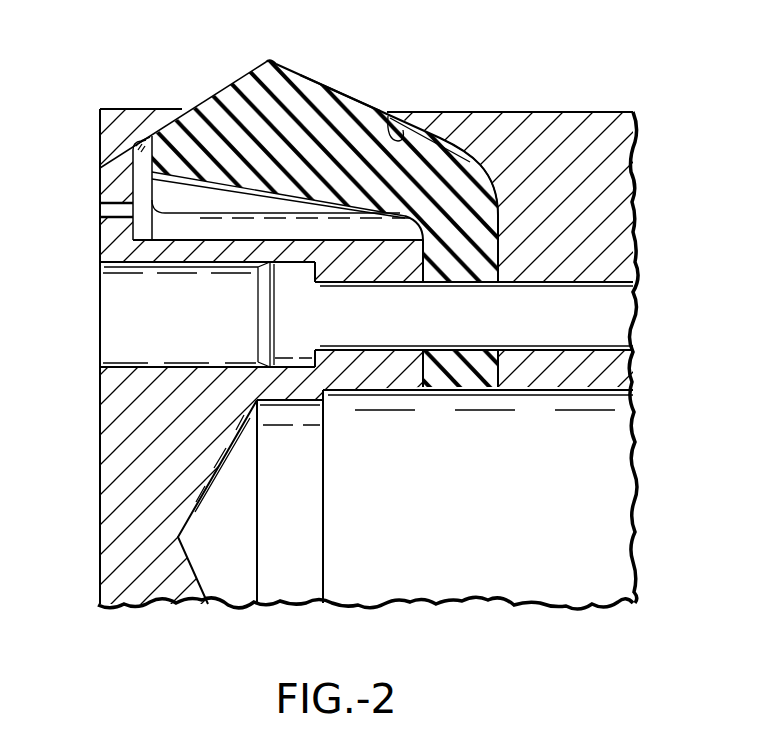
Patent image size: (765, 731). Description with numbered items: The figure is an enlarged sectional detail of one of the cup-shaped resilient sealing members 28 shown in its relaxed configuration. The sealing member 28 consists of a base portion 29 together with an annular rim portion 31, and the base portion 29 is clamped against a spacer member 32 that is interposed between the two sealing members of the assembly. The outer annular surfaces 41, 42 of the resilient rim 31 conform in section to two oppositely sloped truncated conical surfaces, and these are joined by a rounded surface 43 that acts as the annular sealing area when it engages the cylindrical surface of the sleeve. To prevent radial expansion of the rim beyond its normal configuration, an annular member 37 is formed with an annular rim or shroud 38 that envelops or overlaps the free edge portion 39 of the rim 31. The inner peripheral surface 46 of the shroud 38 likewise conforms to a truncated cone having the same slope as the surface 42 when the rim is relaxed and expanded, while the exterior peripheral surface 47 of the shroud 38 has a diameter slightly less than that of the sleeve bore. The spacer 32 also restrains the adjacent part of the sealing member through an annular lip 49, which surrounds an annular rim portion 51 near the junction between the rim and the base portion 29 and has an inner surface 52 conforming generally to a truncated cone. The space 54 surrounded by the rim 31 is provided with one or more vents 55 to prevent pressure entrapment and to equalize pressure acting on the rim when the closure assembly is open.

The sealing member 28 is at (362, 96).
The base portion 29 is at (472, 378).
The annular rim portion 31 is at (273, 173).
The spacer member 32 is at (620, 247).
The annular member 37 is at (112, 140).
The annular rim or shroud 38 is at (166, 112).
The free edge portion 39 is at (192, 142).
The outer annular surface 41 is at (208, 98).
The outer annular surface 42 is at (337, 91).
The rounded surface 43 is at (270, 60).
The inner peripheral surface 46 is at (140, 158).
The exterior peripheral surface 47 is at (112, 108).
The annular lip 49 is at (437, 117).
The annular rim portion 51 is at (440, 185).
The inner surface 52 is at (390, 117).
The space 54 is at (208, 230).
The vent 55 is at (108, 213).